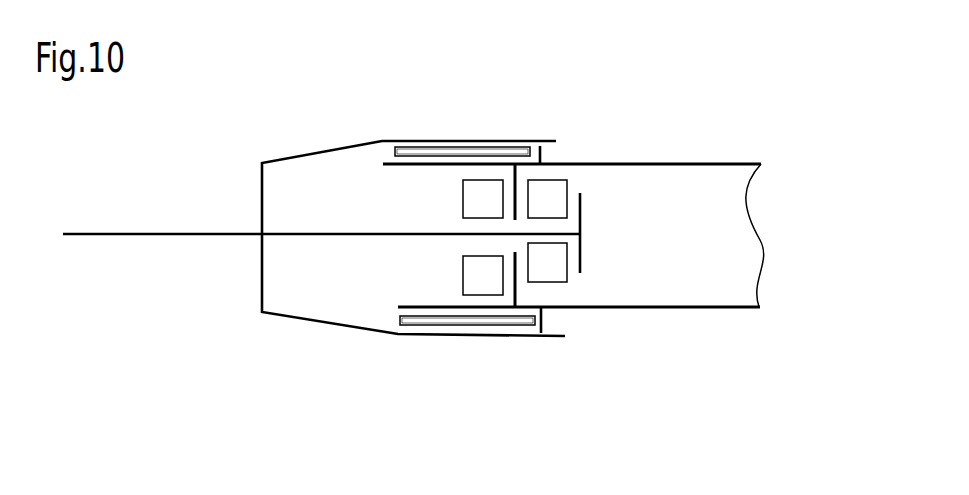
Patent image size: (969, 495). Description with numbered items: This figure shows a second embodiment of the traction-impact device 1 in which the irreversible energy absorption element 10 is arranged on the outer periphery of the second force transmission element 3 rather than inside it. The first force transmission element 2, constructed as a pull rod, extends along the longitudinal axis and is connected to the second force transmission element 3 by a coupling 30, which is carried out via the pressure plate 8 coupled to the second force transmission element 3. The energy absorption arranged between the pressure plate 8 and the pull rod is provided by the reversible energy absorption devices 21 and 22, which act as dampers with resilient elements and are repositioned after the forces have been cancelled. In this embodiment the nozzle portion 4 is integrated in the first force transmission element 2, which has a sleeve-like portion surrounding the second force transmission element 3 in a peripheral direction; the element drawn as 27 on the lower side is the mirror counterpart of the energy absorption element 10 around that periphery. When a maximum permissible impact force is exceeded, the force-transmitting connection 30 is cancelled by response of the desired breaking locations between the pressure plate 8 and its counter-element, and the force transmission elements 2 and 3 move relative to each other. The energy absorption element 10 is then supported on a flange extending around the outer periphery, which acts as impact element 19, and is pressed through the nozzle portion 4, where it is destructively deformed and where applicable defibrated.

The traction-impact device 1 is at (642, 70).
The first force transmission element 2 is at (146, 222).
The second force transmission element 3 is at (693, 163).
The nozzle portion 4 is at (317, 149).
The pressure plate 8 is at (515, 312).
The irreversible energy absorption element 10 is at (452, 146).
The impact element 19 is at (546, 149).
The reversible energy absorption device 21 is at (481, 283).
The reversible energy absorption device 22 is at (557, 270).
The lower insert element 27 is at (426, 337).
The coupling 30 is at (589, 261).